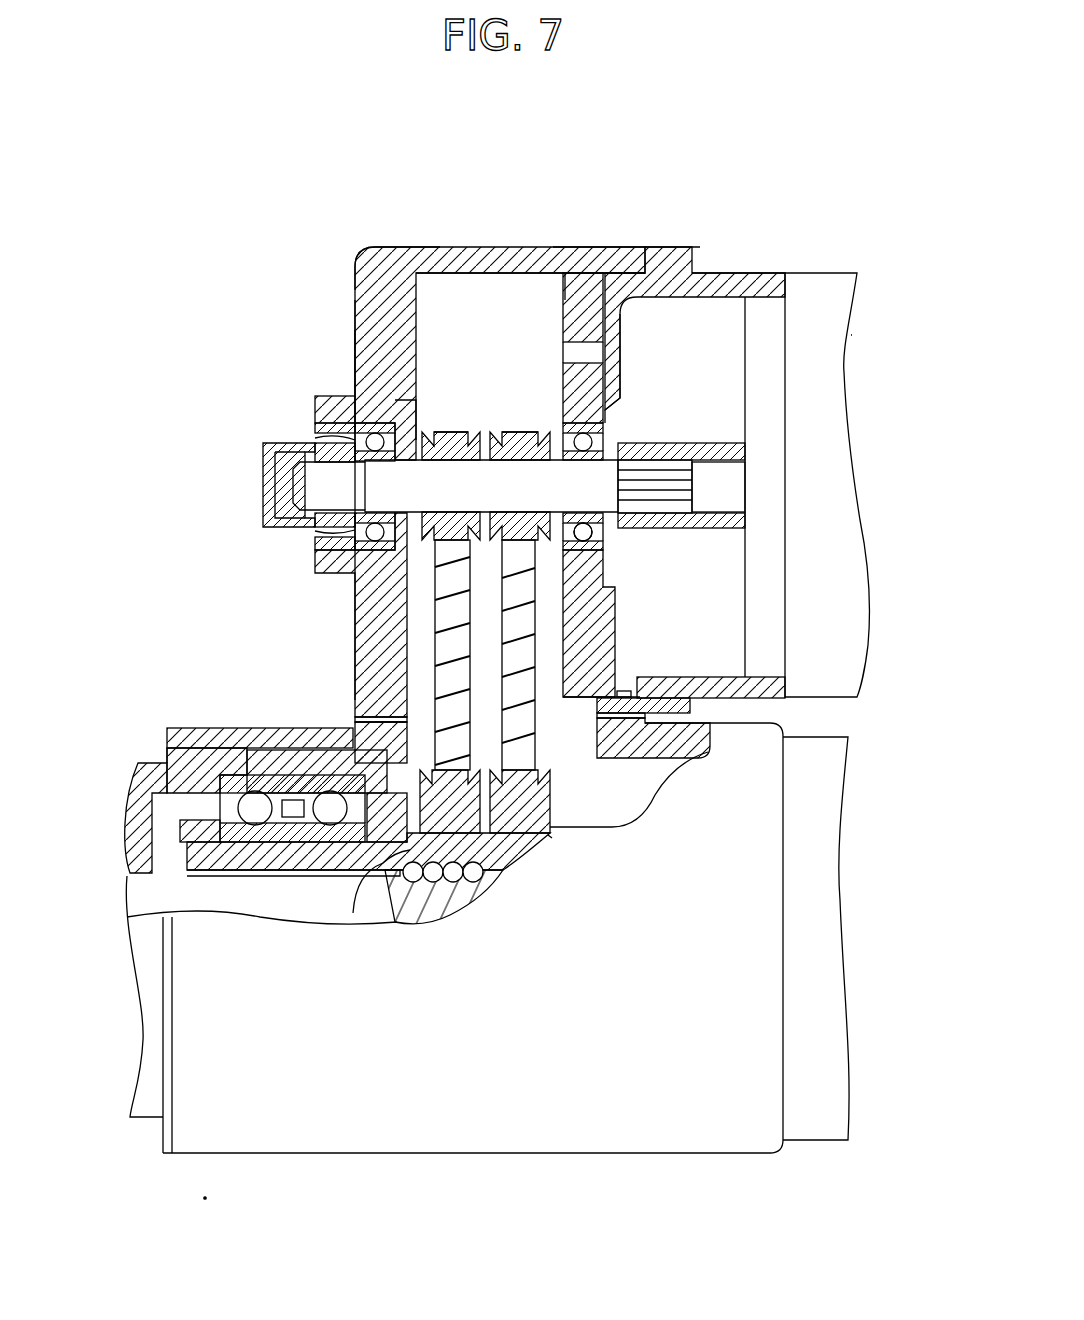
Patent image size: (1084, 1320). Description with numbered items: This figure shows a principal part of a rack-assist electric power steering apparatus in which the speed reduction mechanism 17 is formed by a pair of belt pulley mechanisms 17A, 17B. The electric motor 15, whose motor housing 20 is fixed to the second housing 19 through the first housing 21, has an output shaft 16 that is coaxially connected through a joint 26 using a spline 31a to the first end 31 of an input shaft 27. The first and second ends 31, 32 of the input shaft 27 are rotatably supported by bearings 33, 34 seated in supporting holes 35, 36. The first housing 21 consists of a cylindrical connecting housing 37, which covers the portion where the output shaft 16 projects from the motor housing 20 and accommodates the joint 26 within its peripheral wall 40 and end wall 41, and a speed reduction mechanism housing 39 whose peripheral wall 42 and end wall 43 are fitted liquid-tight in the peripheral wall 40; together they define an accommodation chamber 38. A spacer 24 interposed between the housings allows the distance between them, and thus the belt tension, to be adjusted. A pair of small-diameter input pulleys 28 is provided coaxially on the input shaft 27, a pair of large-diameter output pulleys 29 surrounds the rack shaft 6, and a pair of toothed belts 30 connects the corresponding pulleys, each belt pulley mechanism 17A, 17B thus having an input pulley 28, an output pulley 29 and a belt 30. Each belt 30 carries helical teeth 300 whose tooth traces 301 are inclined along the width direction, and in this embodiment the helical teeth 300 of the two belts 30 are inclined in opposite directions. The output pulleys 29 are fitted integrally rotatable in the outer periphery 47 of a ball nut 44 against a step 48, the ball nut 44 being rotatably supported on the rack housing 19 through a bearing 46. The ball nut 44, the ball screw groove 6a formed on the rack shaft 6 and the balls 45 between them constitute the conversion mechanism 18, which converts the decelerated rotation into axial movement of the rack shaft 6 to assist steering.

The rack shaft 6 is at (143, 890).
The ball screw groove 6a is at (353, 913).
The electric motor 15 is at (851, 335).
The output shaft 16 is at (733, 483).
The speed reduction mechanism 17 is at (192, 270).
The belt pulley mechanism 17A is at (415, 383).
The belt pulley mechanism 17B is at (432, 400).
The conversion mechanism 18 is at (342, 902).
The second housing 19 is at (690, 742).
The motor housing 20 is at (820, 273).
The first housing 21 is at (553, 150).
The spacer 24 is at (388, 710).
The joint 26 is at (697, 422).
The input shaft 27 is at (512, 478).
The input pulley 28 is at (400, 433).
The output pulley 29 is at (543, 830).
The toothed belt 30 is at (435, 597).
The first end 31 is at (583, 478).
The spline 31a is at (665, 455).
The second end 32 is at (315, 488).
The bearing 33 is at (588, 533).
The bearing 34 is at (355, 558).
The supporting hole 35 is at (657, 475).
The supporting hole 36 is at (315, 424).
The connecting housing 37 is at (715, 272).
The accommodation chamber 38 is at (455, 305).
The speed reduction mechanism housing 39 is at (548, 245).
The peripheral wall 40 is at (733, 283).
The end wall 41 is at (567, 307).
The peripheral wall 42 is at (448, 255).
The end wall 43 is at (372, 363).
The ball nut 44 is at (283, 882).
The ball 45 is at (448, 885).
The bearing 46 is at (257, 807).
The outer periphery 47 is at (250, 790).
The step 48 is at (432, 817).
The helical teeth 300 is at (448, 616).
The tooth traces 301 is at (453, 633).